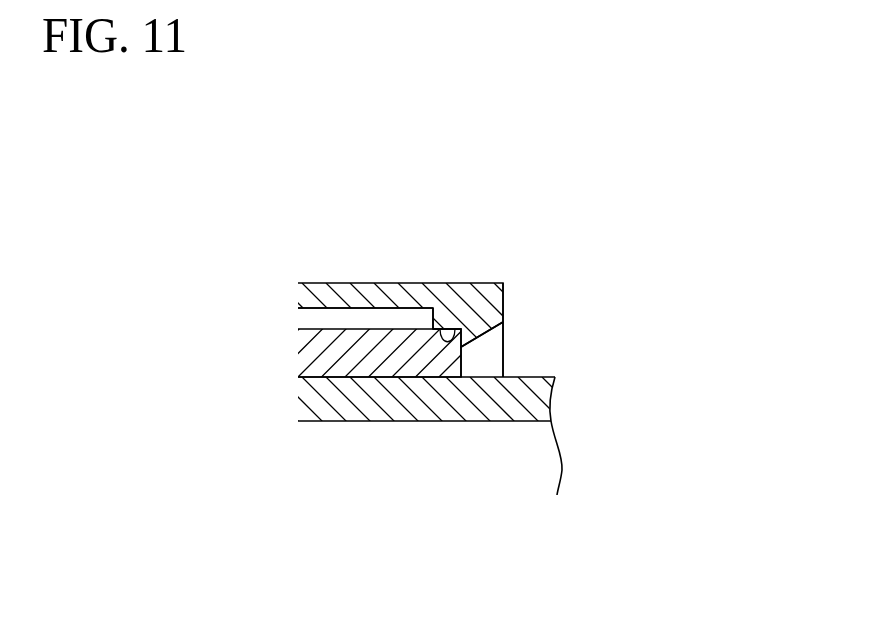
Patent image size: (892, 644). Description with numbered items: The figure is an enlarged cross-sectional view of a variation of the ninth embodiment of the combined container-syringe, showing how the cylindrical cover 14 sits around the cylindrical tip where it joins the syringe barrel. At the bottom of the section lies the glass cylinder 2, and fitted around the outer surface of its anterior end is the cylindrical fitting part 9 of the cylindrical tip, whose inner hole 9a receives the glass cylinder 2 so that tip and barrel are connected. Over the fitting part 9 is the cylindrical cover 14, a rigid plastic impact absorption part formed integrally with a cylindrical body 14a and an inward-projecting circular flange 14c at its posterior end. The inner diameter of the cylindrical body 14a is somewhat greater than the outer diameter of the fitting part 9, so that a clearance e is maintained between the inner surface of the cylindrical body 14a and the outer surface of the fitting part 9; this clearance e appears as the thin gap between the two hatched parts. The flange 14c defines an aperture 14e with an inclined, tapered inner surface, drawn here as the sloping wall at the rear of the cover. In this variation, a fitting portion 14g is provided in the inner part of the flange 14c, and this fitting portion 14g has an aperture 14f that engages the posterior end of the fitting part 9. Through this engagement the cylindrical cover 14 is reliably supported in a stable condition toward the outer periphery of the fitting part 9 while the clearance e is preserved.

The cylindrical cover 14 is at (362, 266).
The cylindrical body 14a is at (407, 306).
The circular flange 14c is at (504, 297).
The aperture 14e is at (504, 338).
The aperture 14f is at (455, 329).
The fitting portion 14g is at (437, 318).
The cylindrical fitting part 9 is at (315, 283).
The inner hole 9a is at (447, 343).
The clearance e is at (396, 316).
The glass cylinder 2 is at (536, 377).